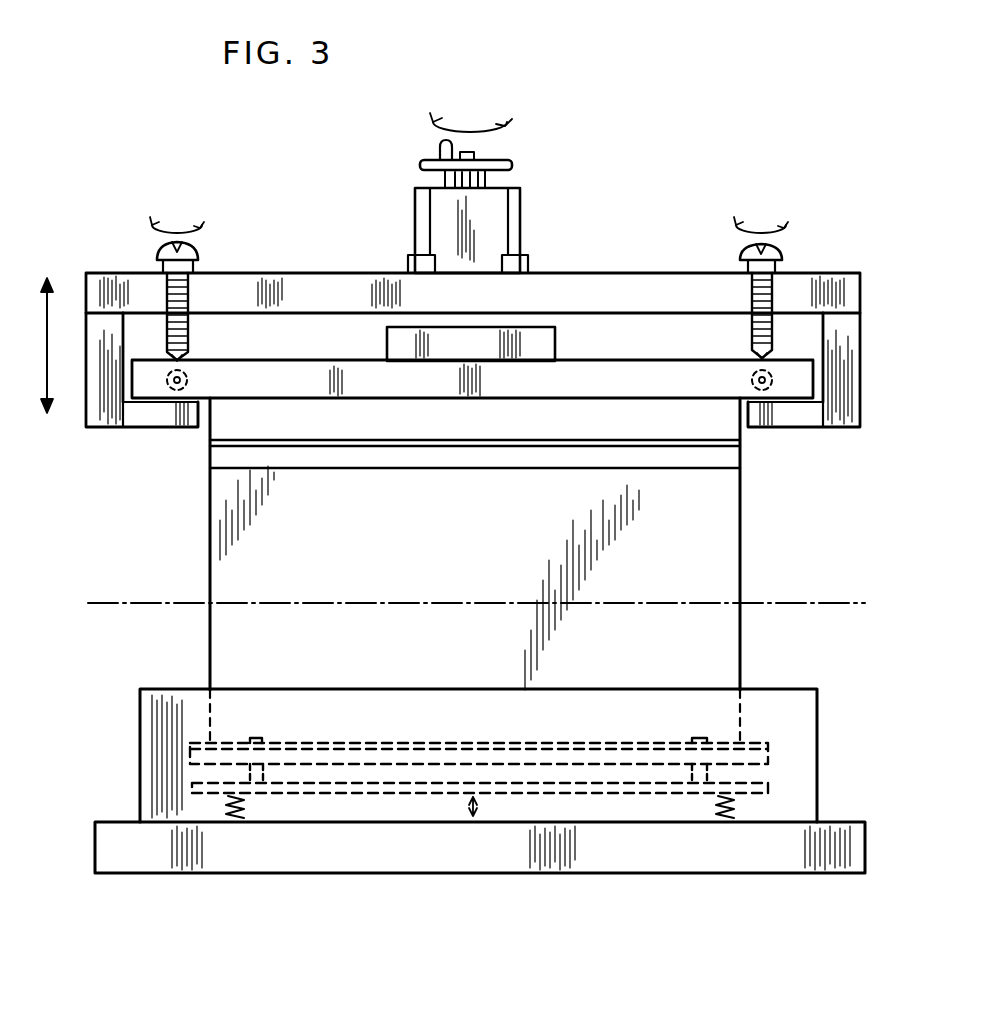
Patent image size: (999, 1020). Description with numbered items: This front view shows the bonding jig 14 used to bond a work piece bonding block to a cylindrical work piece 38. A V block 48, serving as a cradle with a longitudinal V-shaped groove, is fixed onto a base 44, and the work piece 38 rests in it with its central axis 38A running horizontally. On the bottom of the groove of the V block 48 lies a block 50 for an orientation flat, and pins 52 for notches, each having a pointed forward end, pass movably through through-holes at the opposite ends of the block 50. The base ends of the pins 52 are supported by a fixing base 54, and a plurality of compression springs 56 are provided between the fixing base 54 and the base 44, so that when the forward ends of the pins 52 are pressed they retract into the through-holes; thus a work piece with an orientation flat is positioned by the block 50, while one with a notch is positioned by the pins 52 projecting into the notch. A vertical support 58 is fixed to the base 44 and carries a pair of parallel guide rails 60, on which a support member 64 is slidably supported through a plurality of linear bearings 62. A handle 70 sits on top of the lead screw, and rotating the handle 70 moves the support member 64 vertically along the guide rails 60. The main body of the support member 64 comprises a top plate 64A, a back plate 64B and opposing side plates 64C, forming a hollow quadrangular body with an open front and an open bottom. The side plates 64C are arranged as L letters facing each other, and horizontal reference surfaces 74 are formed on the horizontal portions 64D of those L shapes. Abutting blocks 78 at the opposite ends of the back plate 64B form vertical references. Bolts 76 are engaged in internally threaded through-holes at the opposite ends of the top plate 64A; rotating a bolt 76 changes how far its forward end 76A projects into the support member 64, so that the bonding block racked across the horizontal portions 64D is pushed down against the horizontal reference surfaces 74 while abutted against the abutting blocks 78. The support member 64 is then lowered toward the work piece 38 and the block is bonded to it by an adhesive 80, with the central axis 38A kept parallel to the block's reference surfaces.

The device 14 is at (626, 238).
The work piece 38 is at (718, 550).
The central axis 38A is at (800, 604).
The base 44 is at (228, 855).
The V block 48 is at (786, 730).
The block for an orientation flat 50 is at (345, 760).
The pins for notches 52 is at (258, 740).
The fixing base 54 is at (412, 778).
The compression springs 56 is at (242, 808).
The vertical support 58 is at (465, 218).
The guide rails 60 is at (416, 222).
The linear bearings 62 is at (410, 265).
The support member 64 is at (482, 335).
The top plate 64A is at (244, 285).
The back plate 64B is at (298, 330).
The side plates 64C is at (92, 400).
The horizontal portions 64D is at (172, 420).
The handle 70 is at (500, 160).
The horizontal reference surfaces 74 is at (145, 402).
The bolts 76 is at (158, 250).
The screw tip 76A is at (186, 355).
The abutting blocks 78 is at (192, 380).
The adhesive 80 is at (348, 447).